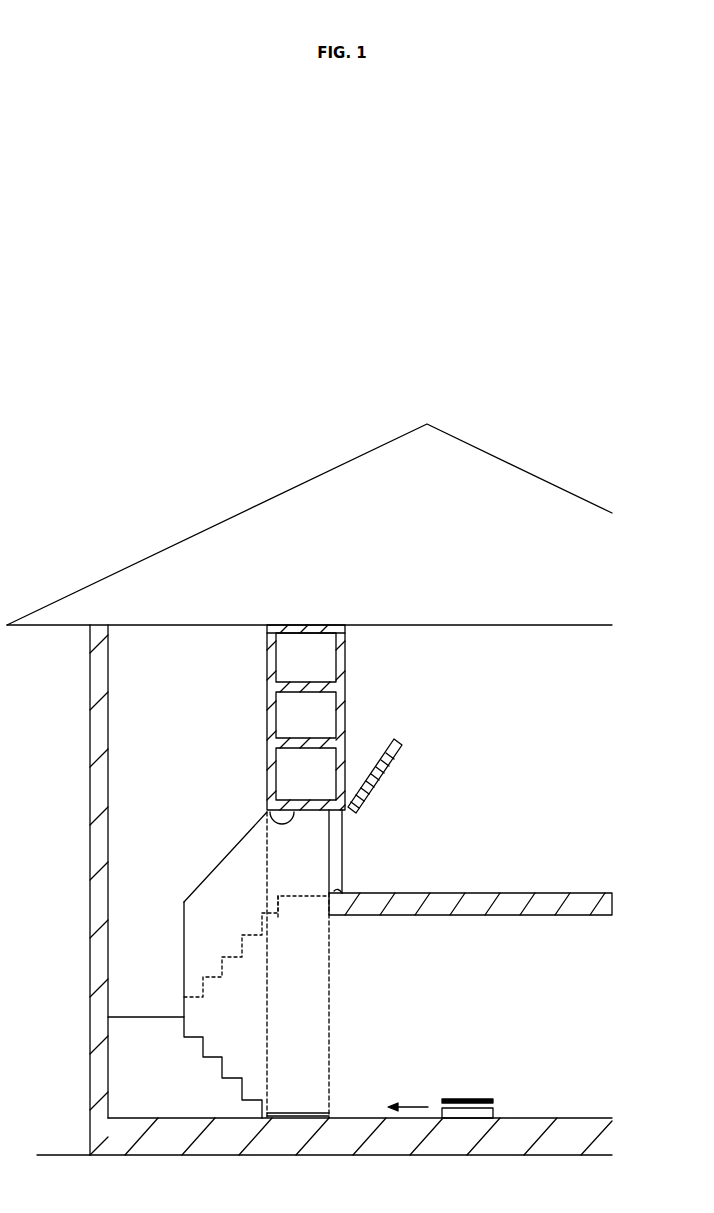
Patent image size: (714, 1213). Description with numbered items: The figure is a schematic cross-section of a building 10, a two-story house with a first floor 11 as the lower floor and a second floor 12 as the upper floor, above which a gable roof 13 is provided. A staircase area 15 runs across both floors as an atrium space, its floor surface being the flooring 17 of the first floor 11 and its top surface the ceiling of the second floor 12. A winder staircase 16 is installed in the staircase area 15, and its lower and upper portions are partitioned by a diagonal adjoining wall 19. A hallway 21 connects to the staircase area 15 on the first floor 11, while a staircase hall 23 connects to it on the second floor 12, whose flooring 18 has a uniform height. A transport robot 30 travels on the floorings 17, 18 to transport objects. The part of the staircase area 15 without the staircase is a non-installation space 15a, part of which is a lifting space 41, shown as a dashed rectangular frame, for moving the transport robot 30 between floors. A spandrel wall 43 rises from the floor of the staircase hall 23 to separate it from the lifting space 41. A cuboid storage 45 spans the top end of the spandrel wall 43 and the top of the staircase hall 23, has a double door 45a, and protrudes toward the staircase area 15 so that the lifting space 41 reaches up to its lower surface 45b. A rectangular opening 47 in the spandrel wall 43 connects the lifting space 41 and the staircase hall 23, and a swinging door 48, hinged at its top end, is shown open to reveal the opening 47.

The building 10 is at (144, 472).
The first floor 11 is at (63, 907).
The second floor 12 is at (63, 632).
The roof 13 is at (483, 460).
The staircase area 15 is at (173, 768).
The non-installation space 15a is at (312, 1024).
The staircase 16 is at (212, 1062).
The flooring 17 is at (555, 1129).
The flooring 18 is at (553, 902).
The adjoining wall 19 is at (213, 868).
The hallway 21 is at (473, 1013).
The staircase hall 23 is at (495, 764).
The transport robot 30 is at (481, 1098).
The lifting space 41 is at (288, 958).
The spandrel wall 43 is at (343, 838).
The storage 45 is at (266, 720).
The door 45a is at (346, 646).
The lower surface 45b is at (267, 812).
The opening 47 is at (344, 890).
The swinging door 48 is at (386, 770).